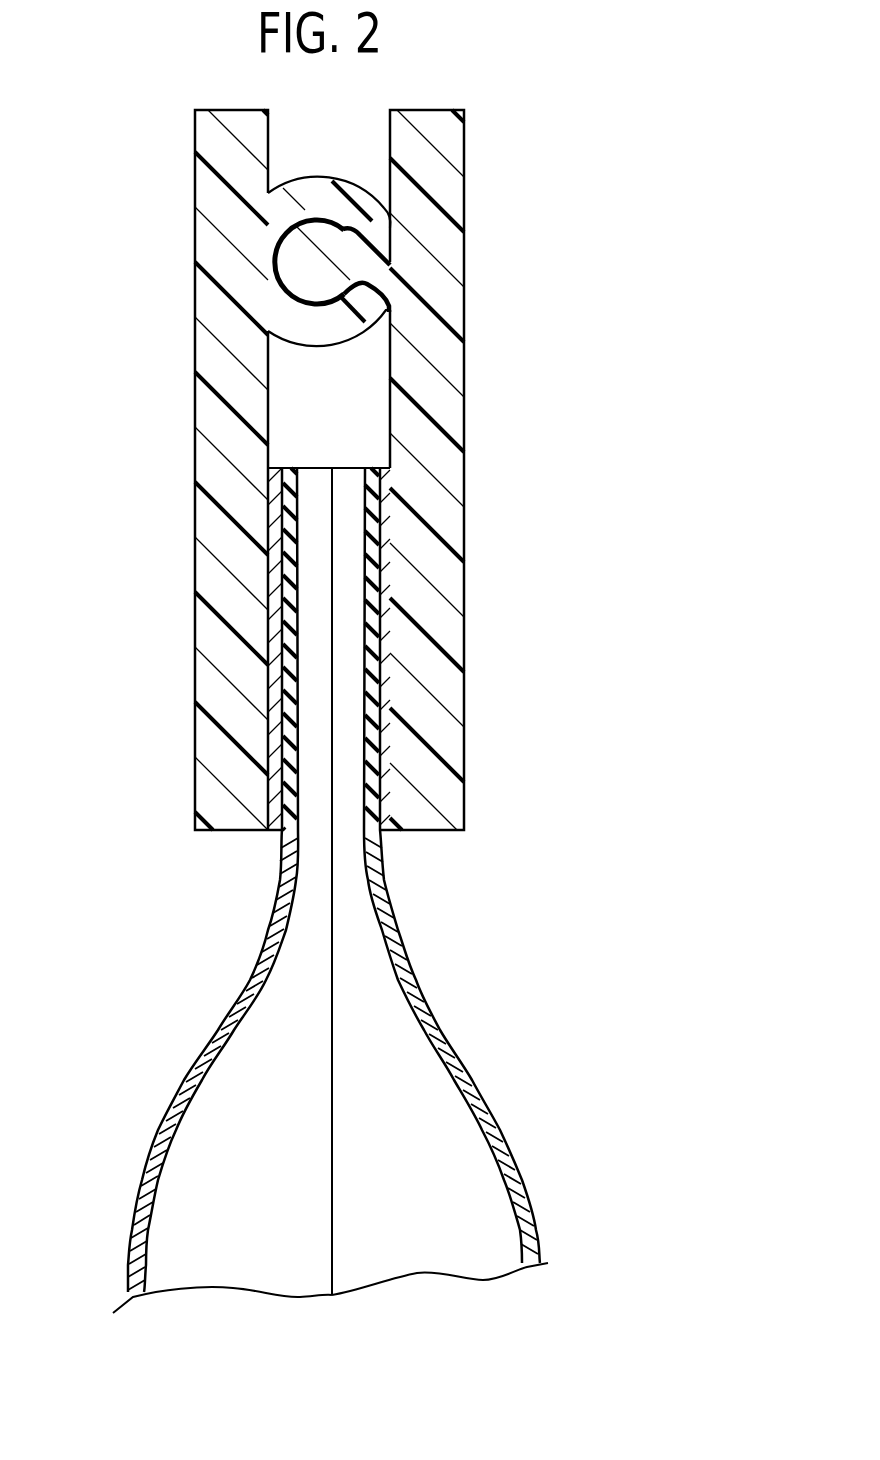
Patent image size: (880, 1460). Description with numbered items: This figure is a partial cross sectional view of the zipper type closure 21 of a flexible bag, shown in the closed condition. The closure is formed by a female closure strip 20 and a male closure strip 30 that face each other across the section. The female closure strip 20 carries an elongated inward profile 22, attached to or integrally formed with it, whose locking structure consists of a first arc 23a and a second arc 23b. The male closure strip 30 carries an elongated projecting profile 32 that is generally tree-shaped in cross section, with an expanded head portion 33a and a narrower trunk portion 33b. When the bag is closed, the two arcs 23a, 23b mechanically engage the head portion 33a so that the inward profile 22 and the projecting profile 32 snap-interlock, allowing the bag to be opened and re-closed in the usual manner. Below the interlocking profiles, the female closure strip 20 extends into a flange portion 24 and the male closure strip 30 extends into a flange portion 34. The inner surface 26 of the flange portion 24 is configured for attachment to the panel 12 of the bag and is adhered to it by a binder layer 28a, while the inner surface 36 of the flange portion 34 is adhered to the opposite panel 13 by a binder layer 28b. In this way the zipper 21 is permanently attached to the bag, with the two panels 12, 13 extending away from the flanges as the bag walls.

The panel 12 is at (280, 958).
The panel 13 is at (394, 955).
The female closure strip 20 is at (166, 196).
The zipper type closure 21 is at (110, 446).
The inward profile 22 is at (306, 176).
The first arc 23a is at (305, 200).
The second arc 23b is at (305, 332).
The flange portion 24 is at (202, 742).
The inner surface 26 is at (268, 505).
The binder layer 28a is at (272, 655).
The binder layer 28b is at (378, 668).
The male closure strip 30 is at (488, 173).
The projecting profile 32 is at (326, 230).
The head portion 33a is at (315, 275).
The trunk portion 33b is at (365, 262).
The flange portion 34 is at (457, 752).
The inner surface 36 is at (392, 520).